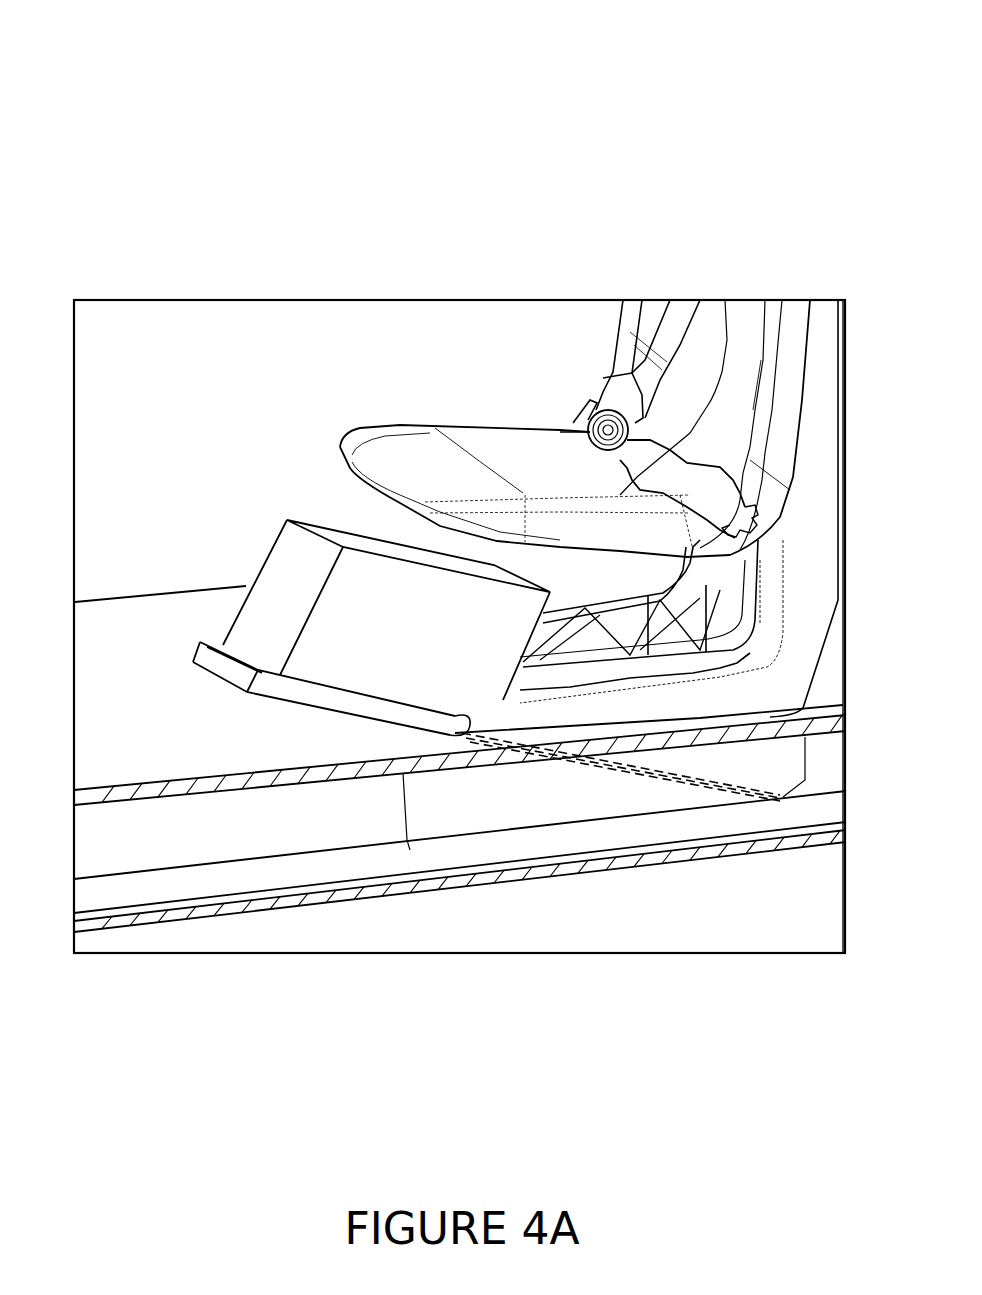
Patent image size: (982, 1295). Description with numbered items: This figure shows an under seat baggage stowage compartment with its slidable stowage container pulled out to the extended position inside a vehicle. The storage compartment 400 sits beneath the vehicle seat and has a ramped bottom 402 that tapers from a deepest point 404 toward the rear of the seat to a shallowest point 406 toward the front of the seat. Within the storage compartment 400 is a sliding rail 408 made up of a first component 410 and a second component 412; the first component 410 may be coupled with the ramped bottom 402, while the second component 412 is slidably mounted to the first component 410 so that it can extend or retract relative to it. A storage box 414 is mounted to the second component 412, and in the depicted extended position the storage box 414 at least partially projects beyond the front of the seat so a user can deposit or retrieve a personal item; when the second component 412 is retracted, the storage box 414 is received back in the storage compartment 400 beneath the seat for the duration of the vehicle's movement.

The storage compartment 400 is at (110, 52).
The ramped bottom 402 is at (585, 765).
The deepest point 404 is at (740, 822).
The shallowest point 406 is at (442, 750).
The sliding rail 408 is at (738, 748).
The first component 410 is at (688, 772).
The second component 412 is at (217, 663).
The storage box 414 is at (455, 598).